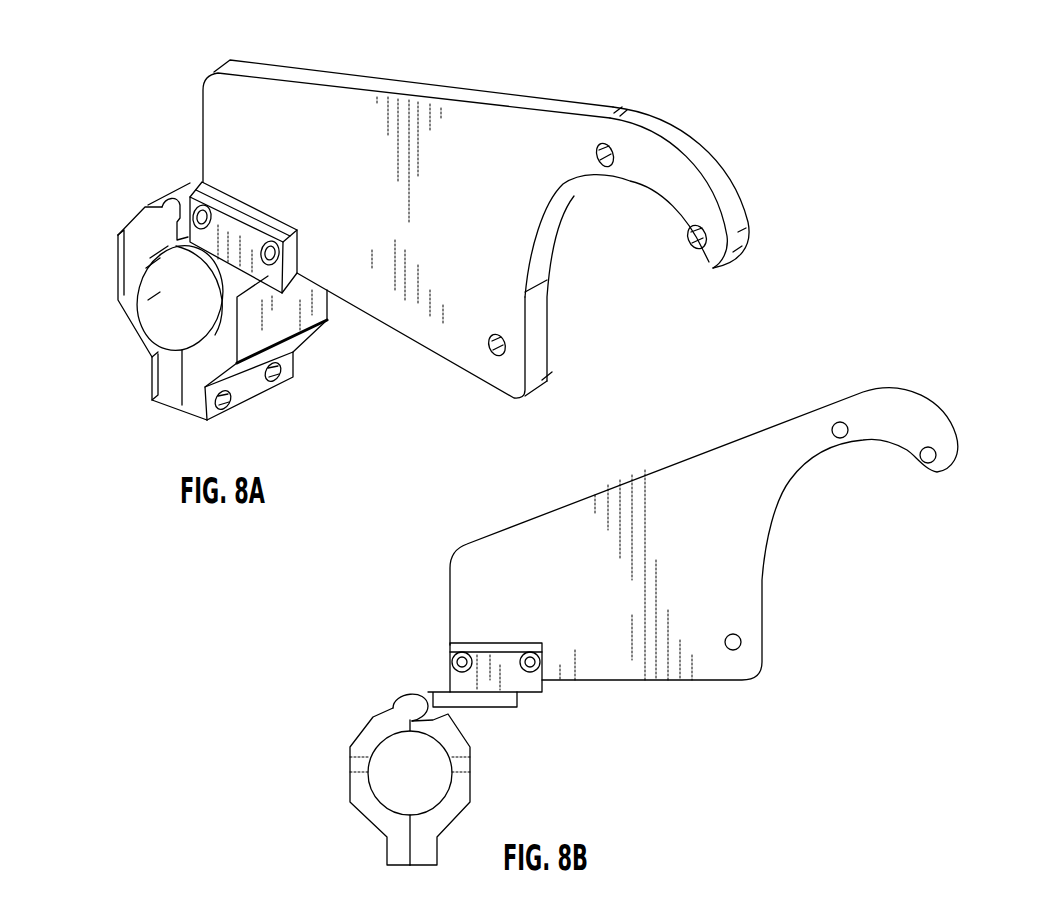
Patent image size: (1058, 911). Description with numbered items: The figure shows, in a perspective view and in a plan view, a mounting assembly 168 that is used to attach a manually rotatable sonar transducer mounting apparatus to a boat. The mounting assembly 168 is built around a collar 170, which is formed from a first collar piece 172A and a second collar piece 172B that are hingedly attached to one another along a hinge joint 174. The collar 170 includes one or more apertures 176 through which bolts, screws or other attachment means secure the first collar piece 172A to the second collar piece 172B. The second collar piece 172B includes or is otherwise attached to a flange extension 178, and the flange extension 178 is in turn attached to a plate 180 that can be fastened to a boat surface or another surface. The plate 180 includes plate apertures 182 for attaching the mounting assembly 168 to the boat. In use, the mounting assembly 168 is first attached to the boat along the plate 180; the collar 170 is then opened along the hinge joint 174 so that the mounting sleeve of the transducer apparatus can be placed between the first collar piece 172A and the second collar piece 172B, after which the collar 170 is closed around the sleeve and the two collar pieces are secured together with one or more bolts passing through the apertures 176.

In FIG. 8A, the mounting assembly 168 is at (729, 39).
In FIG. 8B, the mounting assembly 168 is at (826, 720).
In FIG. 8A, the collar 170 is at (106, 342).
In FIG. 8B, the collar 170 is at (326, 791).
In FIG. 8A, the first collar piece 172A is at (127, 235).
In FIG. 8B, the first collar piece 172A is at (372, 745).
In FIG. 8A, the second collar piece 172B is at (268, 320).
In FIG. 8B, the second collar piece 172B is at (452, 806).
In FIG. 8A, the hinge joint 174 is at (175, 213).
In FIG. 8B, the hinge joint 174 is at (412, 702).
In FIG. 8A, the apertures 176 is at (230, 404).
In FIG. 8A, the flange extension 178 is at (237, 240).
In FIG. 8B, the flange extension 178 is at (493, 682).
In FIG. 8A, the plate 180 is at (362, 150).
In FIG. 8B, the plate 180 is at (538, 555).
In FIG. 8A, the plate apertures 182 is at (604, 168).
In FIG. 8B, the plate apertures 182 is at (838, 437).